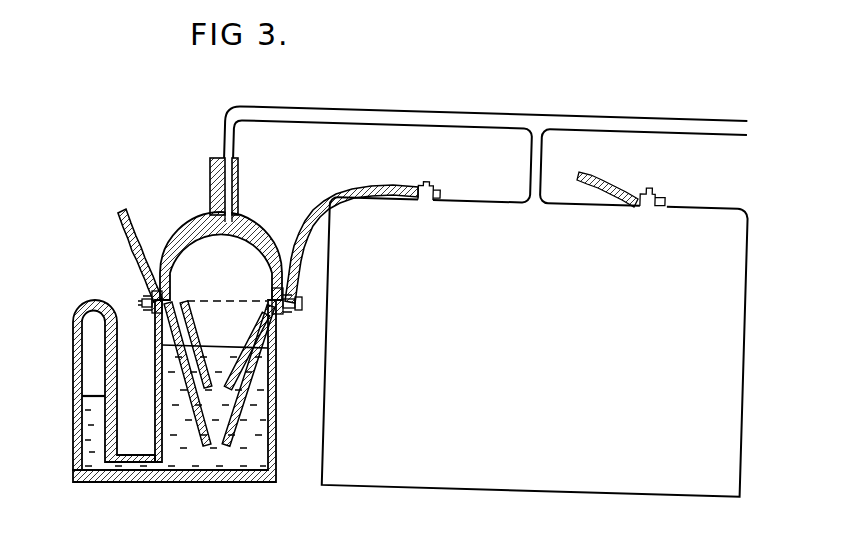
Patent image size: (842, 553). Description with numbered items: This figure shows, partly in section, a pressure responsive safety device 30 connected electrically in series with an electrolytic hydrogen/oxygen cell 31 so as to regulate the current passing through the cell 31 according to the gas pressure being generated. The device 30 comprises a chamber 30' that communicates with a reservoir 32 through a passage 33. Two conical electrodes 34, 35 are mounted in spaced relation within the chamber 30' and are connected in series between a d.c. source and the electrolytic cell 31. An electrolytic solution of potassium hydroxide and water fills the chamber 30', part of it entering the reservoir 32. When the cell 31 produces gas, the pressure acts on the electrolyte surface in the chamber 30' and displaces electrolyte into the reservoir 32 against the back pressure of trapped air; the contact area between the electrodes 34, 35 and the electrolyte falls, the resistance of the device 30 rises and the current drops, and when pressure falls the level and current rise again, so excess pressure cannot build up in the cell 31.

The pressure responsive safety device 30 is at (268, 236).
The chamber 30' is at (238, 240).
The electrolytic hydrogen/oxygen cell 31 is at (548, 347).
The reservoir 32 is at (94, 321).
The passage 33 is at (150, 481).
The conical electrode 34 is at (208, 438).
The conical electrode 35 is at (242, 348).